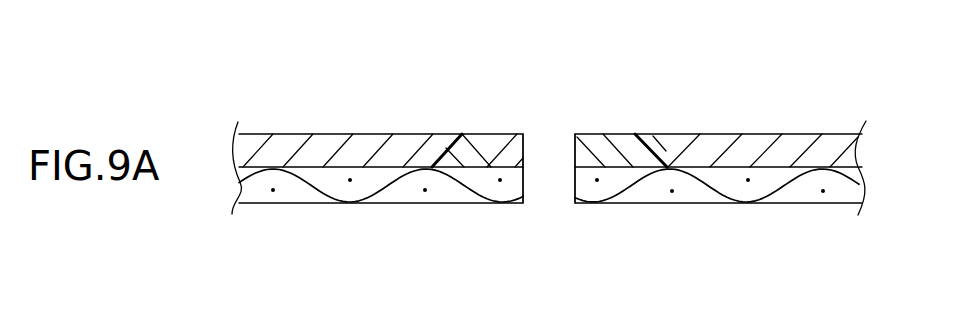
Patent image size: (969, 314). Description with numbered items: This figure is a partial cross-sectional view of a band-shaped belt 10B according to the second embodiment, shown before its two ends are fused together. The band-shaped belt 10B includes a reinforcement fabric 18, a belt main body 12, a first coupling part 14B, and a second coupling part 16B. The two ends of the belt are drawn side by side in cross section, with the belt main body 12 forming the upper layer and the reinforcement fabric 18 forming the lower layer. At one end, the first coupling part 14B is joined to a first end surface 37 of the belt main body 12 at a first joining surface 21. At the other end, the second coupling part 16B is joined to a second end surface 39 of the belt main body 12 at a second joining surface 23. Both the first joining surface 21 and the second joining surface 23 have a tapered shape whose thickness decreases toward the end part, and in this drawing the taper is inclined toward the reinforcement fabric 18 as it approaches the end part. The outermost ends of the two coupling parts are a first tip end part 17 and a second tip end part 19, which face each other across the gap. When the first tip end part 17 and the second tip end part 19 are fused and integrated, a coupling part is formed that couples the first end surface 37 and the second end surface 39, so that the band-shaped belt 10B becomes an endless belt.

The band-shaped belt 10B is at (727, 93).
The belt main body 12 is at (790, 150).
The first coupling part 14B is at (486, 150).
The second coupling part 16B is at (594, 150).
The first tip end part 17 is at (523, 150).
The reinforcement fabric 18 is at (802, 190).
The second tip end part 19 is at (575, 152).
The first joining surface 21 is at (443, 148).
The second joining surface 23 is at (656, 135).
The first end surface 37 is at (448, 173).
The second end surface 39 is at (648, 173).